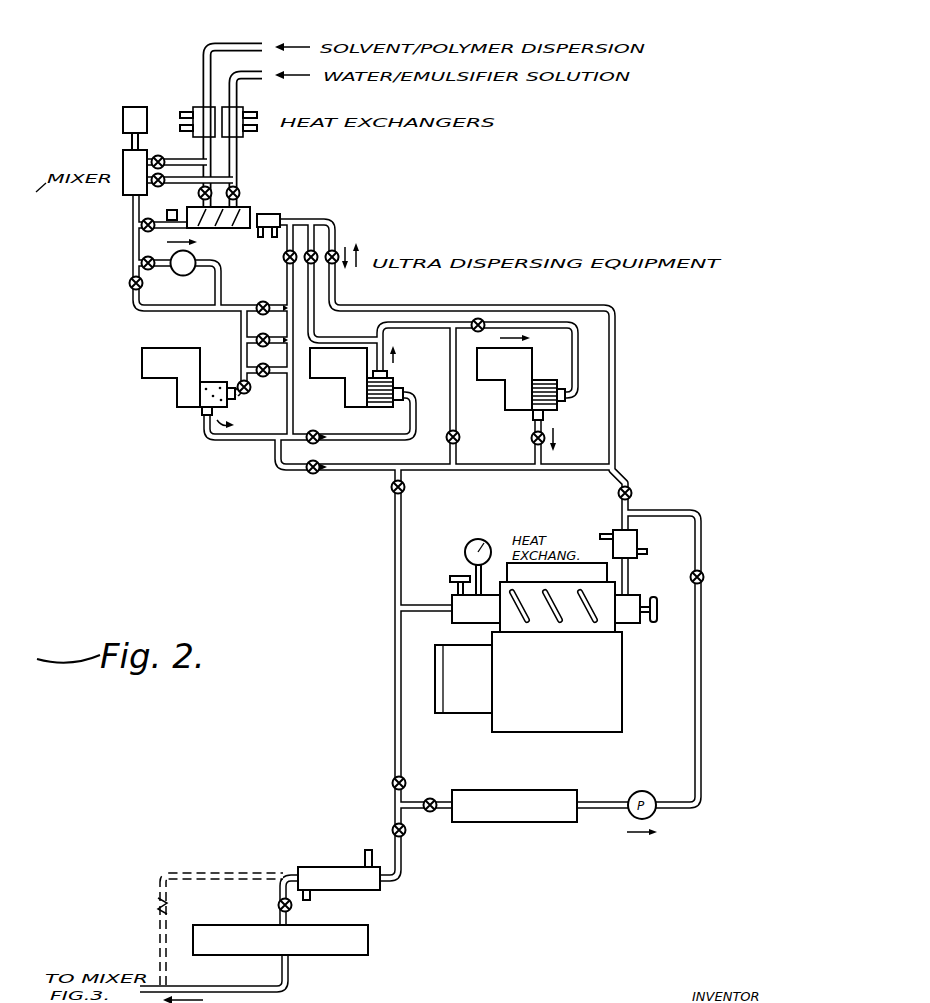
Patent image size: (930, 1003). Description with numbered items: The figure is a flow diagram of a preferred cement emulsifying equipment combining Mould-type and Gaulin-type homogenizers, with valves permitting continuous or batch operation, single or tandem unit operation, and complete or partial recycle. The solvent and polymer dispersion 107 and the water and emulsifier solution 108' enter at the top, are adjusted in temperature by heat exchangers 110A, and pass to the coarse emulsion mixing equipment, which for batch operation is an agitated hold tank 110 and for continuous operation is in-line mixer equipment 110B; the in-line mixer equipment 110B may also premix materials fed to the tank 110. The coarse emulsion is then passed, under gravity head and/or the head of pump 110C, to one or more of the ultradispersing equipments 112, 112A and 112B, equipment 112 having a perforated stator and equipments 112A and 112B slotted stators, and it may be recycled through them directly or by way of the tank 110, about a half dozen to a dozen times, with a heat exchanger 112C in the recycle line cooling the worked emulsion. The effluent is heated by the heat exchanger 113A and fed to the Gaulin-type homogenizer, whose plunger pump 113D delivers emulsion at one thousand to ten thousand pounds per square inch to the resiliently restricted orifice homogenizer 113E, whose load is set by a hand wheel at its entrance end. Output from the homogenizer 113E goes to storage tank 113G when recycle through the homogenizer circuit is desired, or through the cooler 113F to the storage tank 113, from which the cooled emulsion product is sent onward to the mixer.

The solvent and polymer dispersion 107 is at (240, 42).
The water and emulsifier solution 108' is at (260, 141).
The hold tank 110 is at (243, 207).
The heat exchangers 110A is at (243, 135).
The in-line mixer equipment 110B is at (130, 188).
The pump 110C is at (181, 276).
The ultradispersing equipment 112 is at (187, 402).
The ultradispersing equipment 112A is at (348, 395).
The ultradispersing equipment 112B is at (517, 405).
The heat exchanger in the recycle line 112C is at (283, 214).
The storage tank 113 is at (368, 945).
The heat exchanger 113A is at (637, 542).
The plunger pump 113D is at (620, 730).
The high-pressure homogenizer 113E is at (630, 628).
The cooler 113F is at (368, 890).
The storage tank 113G is at (537, 823).